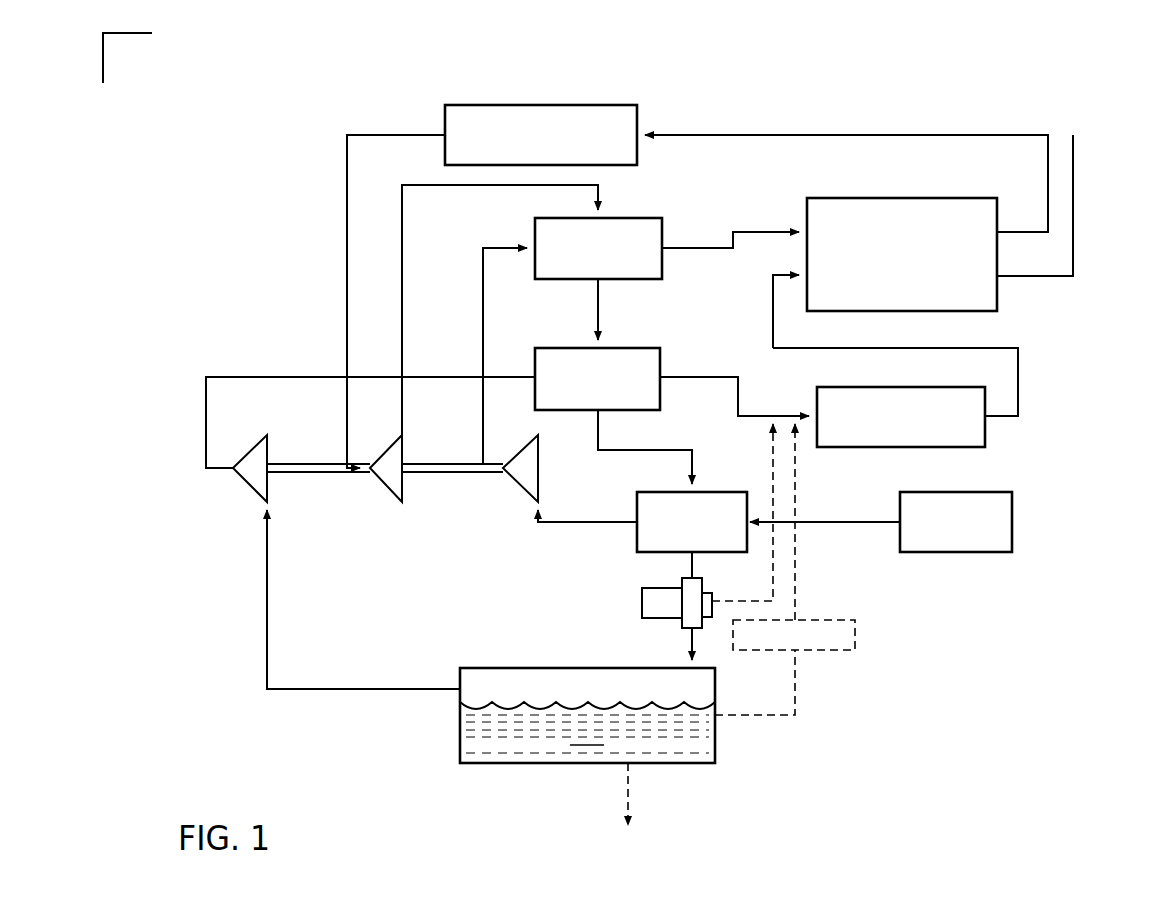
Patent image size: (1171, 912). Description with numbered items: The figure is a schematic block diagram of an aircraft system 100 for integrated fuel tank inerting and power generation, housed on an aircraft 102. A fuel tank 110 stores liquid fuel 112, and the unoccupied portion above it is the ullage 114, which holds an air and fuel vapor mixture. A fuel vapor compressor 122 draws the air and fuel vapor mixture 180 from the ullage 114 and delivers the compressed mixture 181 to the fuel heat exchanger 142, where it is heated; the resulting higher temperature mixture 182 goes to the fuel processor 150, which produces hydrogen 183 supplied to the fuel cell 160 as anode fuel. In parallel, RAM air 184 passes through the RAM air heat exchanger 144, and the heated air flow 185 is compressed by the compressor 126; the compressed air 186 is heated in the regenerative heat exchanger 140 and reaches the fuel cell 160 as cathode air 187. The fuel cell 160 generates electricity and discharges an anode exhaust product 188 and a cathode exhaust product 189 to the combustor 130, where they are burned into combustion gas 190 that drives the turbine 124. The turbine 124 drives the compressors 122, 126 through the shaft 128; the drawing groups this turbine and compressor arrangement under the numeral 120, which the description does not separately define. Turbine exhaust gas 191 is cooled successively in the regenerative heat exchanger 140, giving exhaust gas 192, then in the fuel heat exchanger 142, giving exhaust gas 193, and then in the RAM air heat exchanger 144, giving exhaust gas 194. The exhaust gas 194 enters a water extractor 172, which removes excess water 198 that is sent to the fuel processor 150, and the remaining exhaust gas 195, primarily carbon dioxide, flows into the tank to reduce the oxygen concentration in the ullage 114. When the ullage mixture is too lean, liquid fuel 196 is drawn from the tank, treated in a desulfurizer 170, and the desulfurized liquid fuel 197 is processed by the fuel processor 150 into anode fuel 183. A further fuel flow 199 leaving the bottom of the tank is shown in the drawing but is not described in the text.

The aircraft system 100 is at (204, 110).
The aircraft 102 is at (103, 50).
The fuel tank 110 is at (554, 713).
The liquid fuel 112 is at (490, 750).
The ullage 114 is at (470, 668).
The turbomachine 120 is at (355, 494).
The fuel vapor compressor 122 is at (240, 478).
The turbine 124 is at (378, 480).
The compressor 126 is at (512, 482).
The shaft 128 is at (297, 464).
The combustor 130 is at (541, 105).
The regenerative heat exchanger 140 is at (640, 218).
The fuel heat exchanger 142 is at (638, 348).
The RAM air heat exchanger 144 is at (718, 492).
The fuel processor 150 is at (985, 432).
The fuel cell 160 is at (997, 294).
The desulfurizer 170 is at (855, 630).
The water extractor 172 is at (642, 598).
The air and fuel vapor mixture 180 is at (266, 620).
The compressed mixture 181 is at (229, 377).
The higher temperature air and fuel vapor mixture 182 is at (719, 377).
The hydrogen 183 is at (1018, 368).
The RAM air 184 is at (855, 522).
The air flow 185 is at (592, 522).
The compressed air 186 is at (483, 398).
The cathode air 187 is at (697, 250).
The anode exhaust product 188 is at (1073, 198).
The cathode exhaust product 189 is at (1048, 154).
The combustion gas 190 is at (400, 135).
The turbine exhaust gas 191 is at (402, 243).
The exhaust gas from regenerative heat exchanger 192 is at (597, 304).
The exhaust gas from fuel heat exchanger 193 is at (597, 420).
The exhaust gas from RAM air heat exchanger 194 is at (690, 558).
The inerting exhaust gas 195 is at (690, 640).
The liquid fuel 196 is at (795, 668).
The desulfurized liquid fuel 197 is at (795, 570).
The excess water 198 is at (773, 585).
The fuel outlet line 199 is at (628, 787).